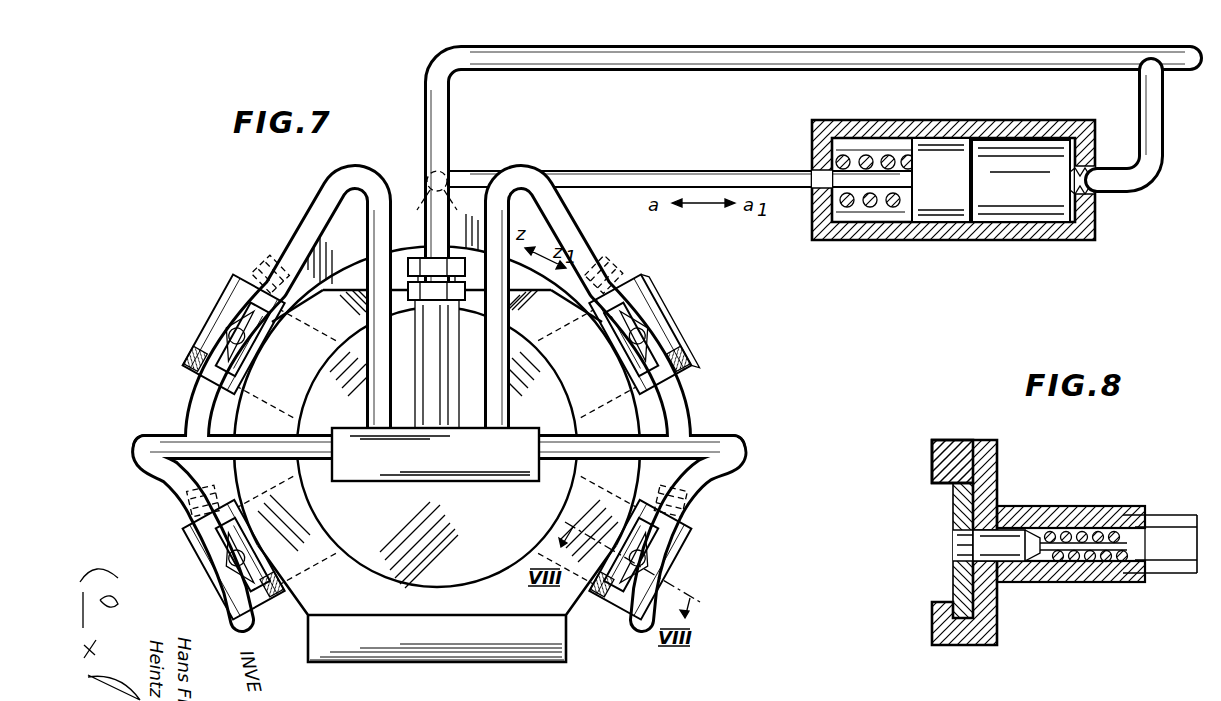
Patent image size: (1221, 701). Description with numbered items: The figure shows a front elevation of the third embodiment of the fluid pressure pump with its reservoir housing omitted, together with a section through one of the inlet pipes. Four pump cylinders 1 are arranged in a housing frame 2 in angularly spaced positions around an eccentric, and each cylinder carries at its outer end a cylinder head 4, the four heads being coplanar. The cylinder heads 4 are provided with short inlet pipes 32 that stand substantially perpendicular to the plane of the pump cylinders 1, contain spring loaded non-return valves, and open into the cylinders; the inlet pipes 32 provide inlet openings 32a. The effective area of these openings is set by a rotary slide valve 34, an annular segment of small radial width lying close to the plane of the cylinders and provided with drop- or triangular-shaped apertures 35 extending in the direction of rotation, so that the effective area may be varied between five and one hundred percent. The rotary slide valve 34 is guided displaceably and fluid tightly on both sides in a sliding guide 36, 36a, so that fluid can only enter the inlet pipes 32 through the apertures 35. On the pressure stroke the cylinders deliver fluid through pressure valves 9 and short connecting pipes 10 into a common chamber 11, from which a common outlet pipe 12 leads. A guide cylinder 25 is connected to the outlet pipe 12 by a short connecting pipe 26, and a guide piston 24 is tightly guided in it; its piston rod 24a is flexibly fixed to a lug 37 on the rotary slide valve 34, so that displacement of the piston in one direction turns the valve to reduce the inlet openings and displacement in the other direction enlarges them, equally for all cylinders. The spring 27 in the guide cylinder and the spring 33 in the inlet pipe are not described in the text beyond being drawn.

In FIG. 7, the pump cylinder 1 is at (334, 338).
In FIG. 7, the housing frame 2 is at (252, 413).
In FIG. 7, the cylinder head 4 is at (640, 296).
In FIG. 7, the pressure valve 9 is at (610, 268).
In FIG. 7, the connecting pipe 10 is at (319, 207).
In FIG. 7, the chamber 11 is at (447, 484).
In FIG. 7, the outlet pipe 12 is at (425, 103).
In FIG. 7, the guide piston 24 is at (938, 232).
In FIG. 7, the piston rod 24a is at (719, 171).
In FIG. 7, the guide cylinder 25 is at (1030, 238).
In FIG. 7, the connecting pipe 26 is at (1163, 122).
In FIG. 7, the spring 27 is at (866, 224).
In FIG. 8, the inlet pipe 32 is at (1030, 506).
In FIG. 7, the inlet opening 32a is at (668, 332).
In FIG. 8, the inlet opening 32a is at (985, 553).
In FIG. 8, the spring 33 is at (1076, 562).
In FIG. 7, the rotary slide valve 34 is at (680, 394).
In FIG. 8, the rotary slide valve 34 is at (953, 508).
In FIG. 7, the aperture 35 is at (683, 355).
In FIG. 8, the aperture 35 is at (957, 545).
In FIG. 8, the sliding guide 36 is at (990, 462).
In FIG. 7, the sliding guide 36a is at (655, 309).
In FIG. 8, the sliding guide 36a is at (932, 462).
In FIG. 7, the lug 37 is at (428, 172).